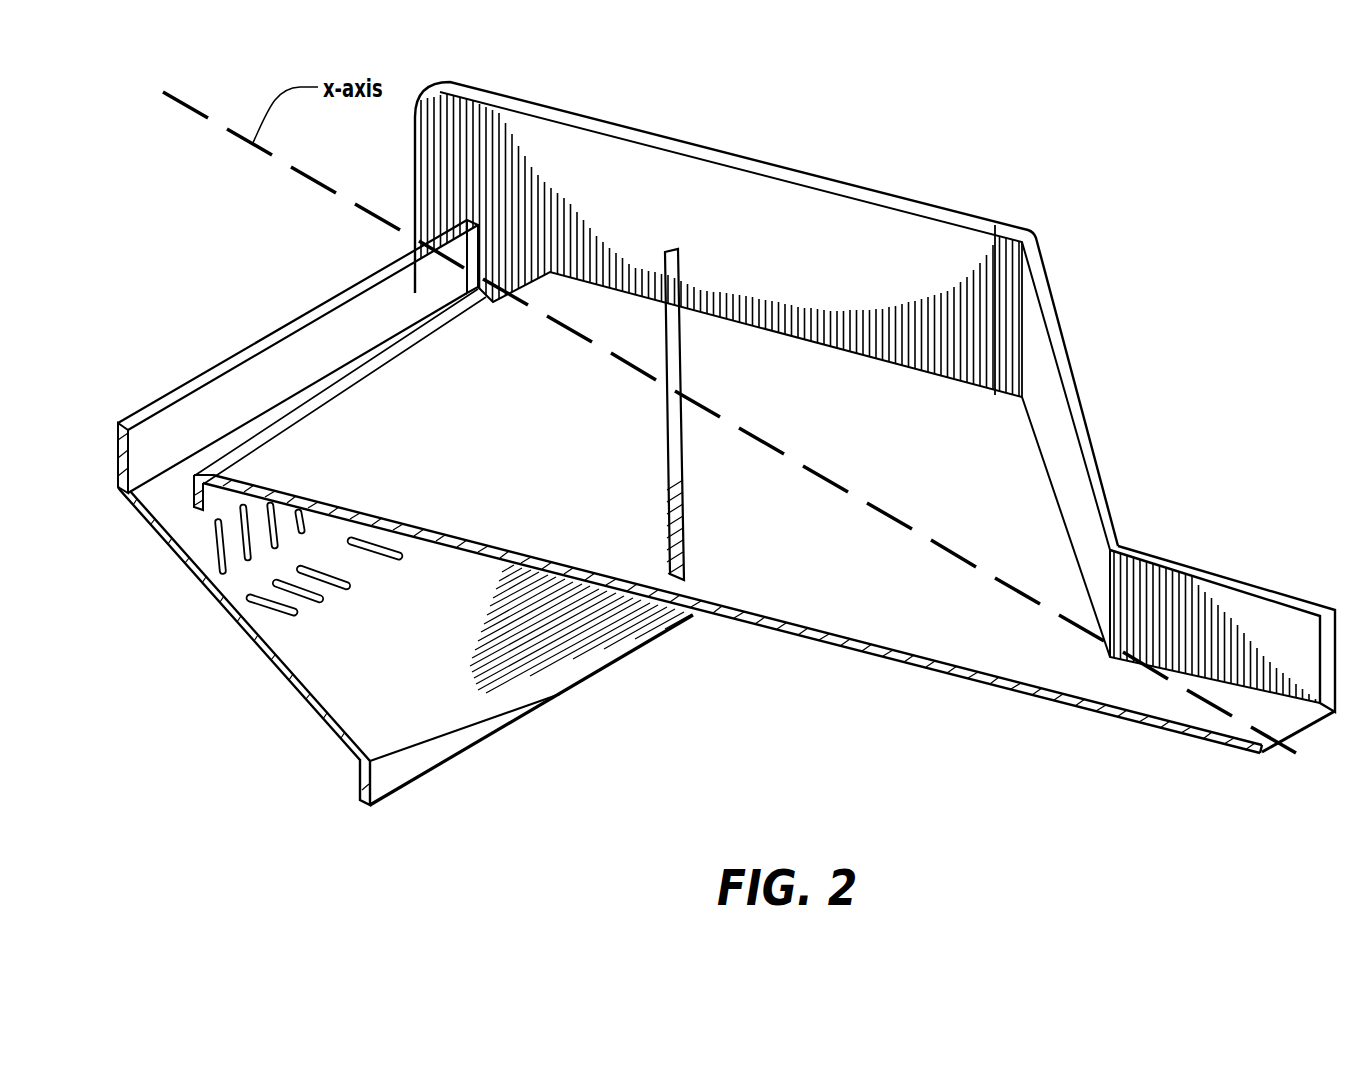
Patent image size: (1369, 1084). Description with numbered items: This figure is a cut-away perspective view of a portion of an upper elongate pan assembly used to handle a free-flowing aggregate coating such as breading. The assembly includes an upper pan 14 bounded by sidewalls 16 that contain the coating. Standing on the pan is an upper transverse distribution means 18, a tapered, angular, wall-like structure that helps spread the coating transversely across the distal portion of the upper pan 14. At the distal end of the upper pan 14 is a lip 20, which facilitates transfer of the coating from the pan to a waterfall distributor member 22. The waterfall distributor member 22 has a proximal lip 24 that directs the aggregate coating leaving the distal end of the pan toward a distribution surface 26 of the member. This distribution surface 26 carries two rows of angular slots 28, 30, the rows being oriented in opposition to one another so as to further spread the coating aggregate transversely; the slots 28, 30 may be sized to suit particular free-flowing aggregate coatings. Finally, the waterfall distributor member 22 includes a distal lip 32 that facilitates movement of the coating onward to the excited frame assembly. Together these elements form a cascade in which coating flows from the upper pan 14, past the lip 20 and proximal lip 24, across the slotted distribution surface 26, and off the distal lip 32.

The upper pan 14 is at (993, 490).
The sidewalls 16 is at (932, 245).
The upper transverse distribution means 18 is at (674, 330).
The lip 20 is at (190, 485).
The waterfall distributor member 22 is at (217, 777).
The proximal lip 24 is at (257, 350).
The distribution surface 26 is at (530, 637).
The angular slots 28 is at (217, 550).
The angular slots 30 is at (295, 612).
The distal lip 32 is at (443, 743).